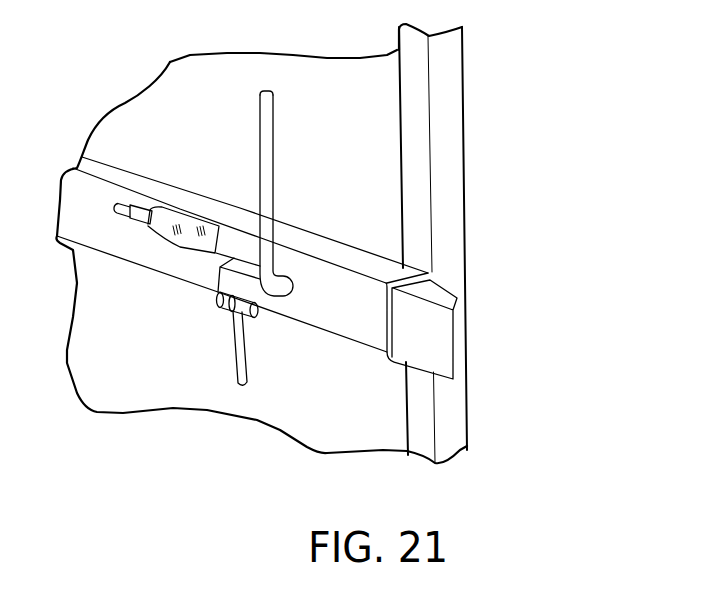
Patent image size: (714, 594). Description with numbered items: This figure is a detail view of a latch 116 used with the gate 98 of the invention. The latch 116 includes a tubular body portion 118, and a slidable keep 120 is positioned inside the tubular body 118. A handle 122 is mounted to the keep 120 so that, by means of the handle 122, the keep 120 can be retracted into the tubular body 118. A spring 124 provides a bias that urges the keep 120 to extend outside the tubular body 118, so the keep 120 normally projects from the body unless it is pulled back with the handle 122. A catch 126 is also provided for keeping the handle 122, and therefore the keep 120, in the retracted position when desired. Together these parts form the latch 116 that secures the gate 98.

The gate 98 is at (249, 63).
The latch 116 is at (323, 342).
The tubular body portion 118 is at (363, 332).
The slidable keep 120 is at (447, 331).
The handle 122 is at (263, 147).
The spring 124 is at (168, 225).
The catch 126 is at (238, 359).